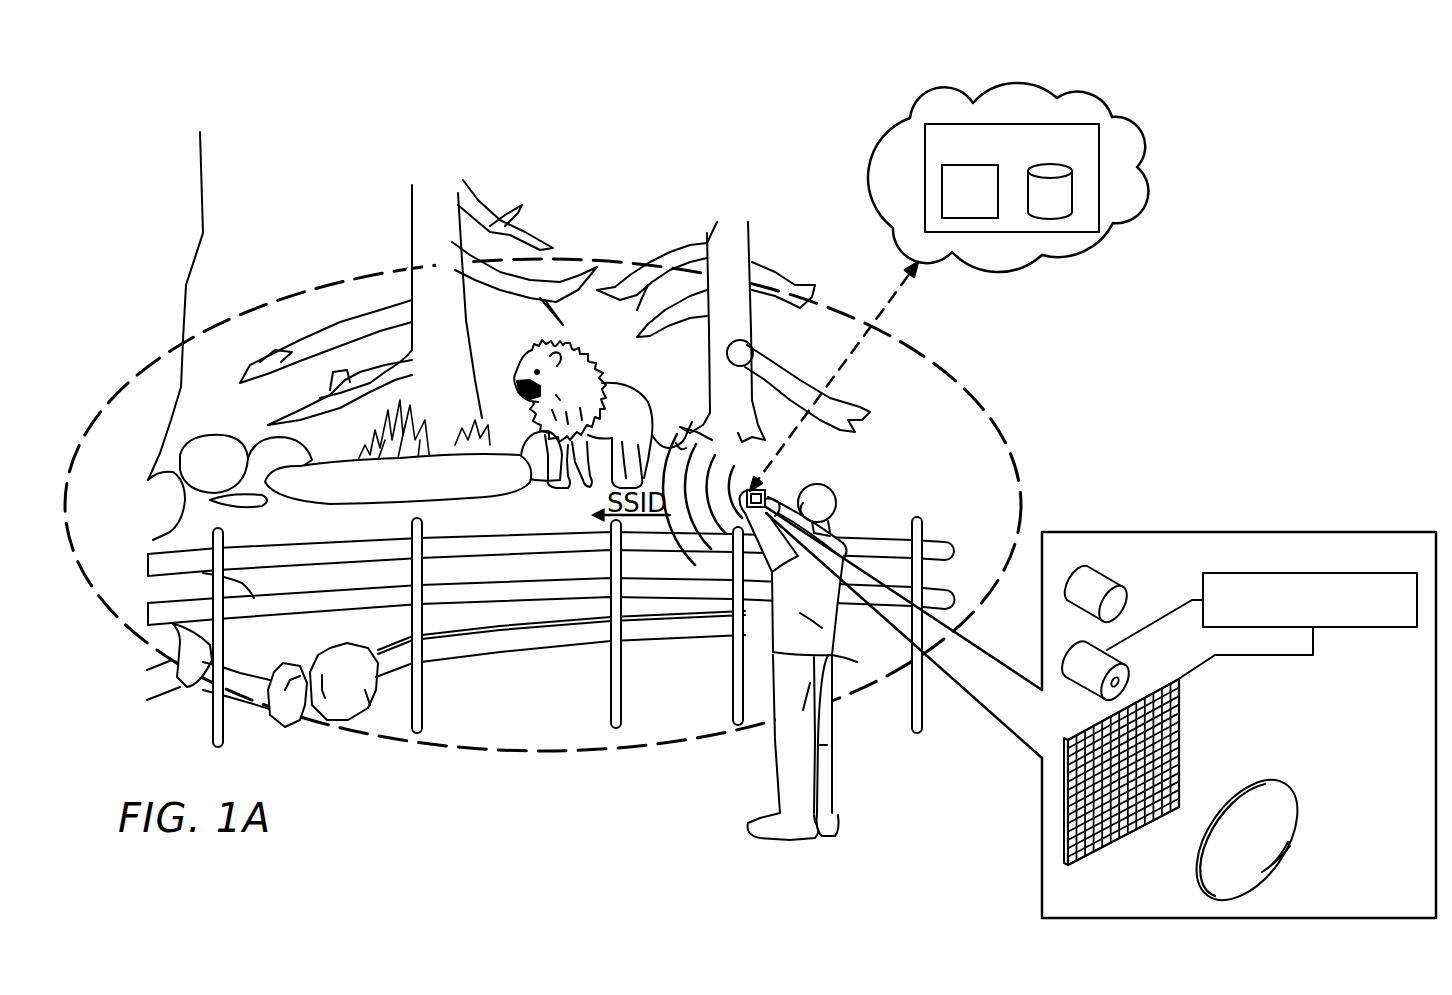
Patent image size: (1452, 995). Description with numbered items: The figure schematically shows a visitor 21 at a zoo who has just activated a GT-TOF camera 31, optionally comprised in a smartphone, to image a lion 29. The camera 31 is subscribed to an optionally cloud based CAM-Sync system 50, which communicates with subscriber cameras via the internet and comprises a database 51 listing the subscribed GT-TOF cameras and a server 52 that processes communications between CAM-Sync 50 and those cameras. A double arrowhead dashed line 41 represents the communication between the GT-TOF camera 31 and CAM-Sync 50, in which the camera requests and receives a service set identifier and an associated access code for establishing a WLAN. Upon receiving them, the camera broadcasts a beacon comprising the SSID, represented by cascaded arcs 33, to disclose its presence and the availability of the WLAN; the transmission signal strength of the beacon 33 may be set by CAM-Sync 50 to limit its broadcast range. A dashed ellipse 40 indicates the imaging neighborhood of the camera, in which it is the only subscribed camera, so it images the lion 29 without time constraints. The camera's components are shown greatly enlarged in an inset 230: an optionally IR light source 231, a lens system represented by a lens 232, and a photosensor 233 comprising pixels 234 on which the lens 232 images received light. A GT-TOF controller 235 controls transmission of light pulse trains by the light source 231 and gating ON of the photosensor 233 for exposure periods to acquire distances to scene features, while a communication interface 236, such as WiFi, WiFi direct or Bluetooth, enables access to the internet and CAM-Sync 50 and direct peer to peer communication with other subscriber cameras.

The visitor 21 is at (838, 477).
The lion 29 is at (609, 380).
The GT-TOF camera 31 is at (745, 522).
The cascaded arcs (beacon) 33 is at (708, 555).
The dashed ellipse (imaging neighborhood) 40 is at (1013, 462).
The double arrowhead dashed line 41 is at (893, 313).
The CAM-Sync system 50 is at (1145, 178).
The database 51 is at (1050, 191).
The server 52 is at (970, 191).
The inset 230 is at (1362, 532).
The light source 231 is at (1072, 652).
The lens 232 is at (1286, 794).
The photosensor 233 is at (1198, 725).
The pixels 234 is at (1077, 805).
The GT-TOF controller 235 is at (1375, 627).
The communication interface 236 is at (1120, 590).